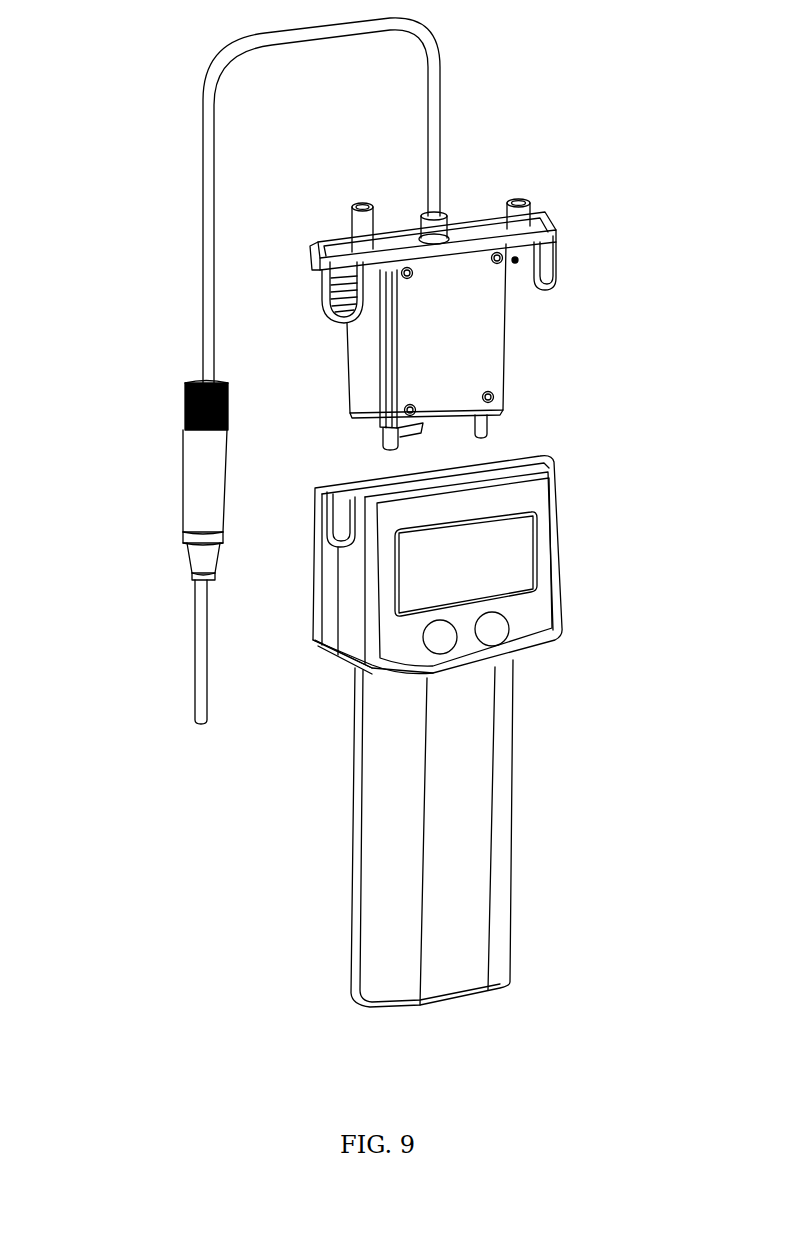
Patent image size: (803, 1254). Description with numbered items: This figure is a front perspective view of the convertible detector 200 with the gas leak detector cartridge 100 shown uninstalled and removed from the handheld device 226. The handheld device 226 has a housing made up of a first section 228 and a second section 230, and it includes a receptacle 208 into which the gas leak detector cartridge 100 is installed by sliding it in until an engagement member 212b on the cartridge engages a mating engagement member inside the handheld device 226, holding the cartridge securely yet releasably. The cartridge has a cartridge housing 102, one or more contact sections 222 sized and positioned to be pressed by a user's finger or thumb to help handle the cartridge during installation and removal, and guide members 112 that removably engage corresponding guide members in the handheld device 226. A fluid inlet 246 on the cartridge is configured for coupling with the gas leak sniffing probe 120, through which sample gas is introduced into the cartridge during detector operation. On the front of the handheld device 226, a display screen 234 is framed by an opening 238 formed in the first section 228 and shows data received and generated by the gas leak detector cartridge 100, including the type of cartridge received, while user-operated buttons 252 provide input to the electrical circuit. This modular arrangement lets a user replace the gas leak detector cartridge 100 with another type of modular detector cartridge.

The gas leak detector cartridge 100 is at (586, 214).
The cartridge housing 102 is at (510, 373).
The guide members 112 is at (490, 430).
The gas leak sniffing probe 120 is at (163, 606).
The convertible detector 200 is at (156, 199).
The receptacle 208 is at (345, 460).
The engagement member 212b is at (515, 261).
The contact sections 222 is at (330, 293).
The handheld device 226 is at (578, 789).
The first section 228 is at (322, 647).
The second section 230 is at (350, 867).
The display screen 234 is at (523, 535).
The opening 238 is at (535, 568).
The fluid inlet 246 is at (427, 200).
The user-operated buttons 252 is at (440, 637).